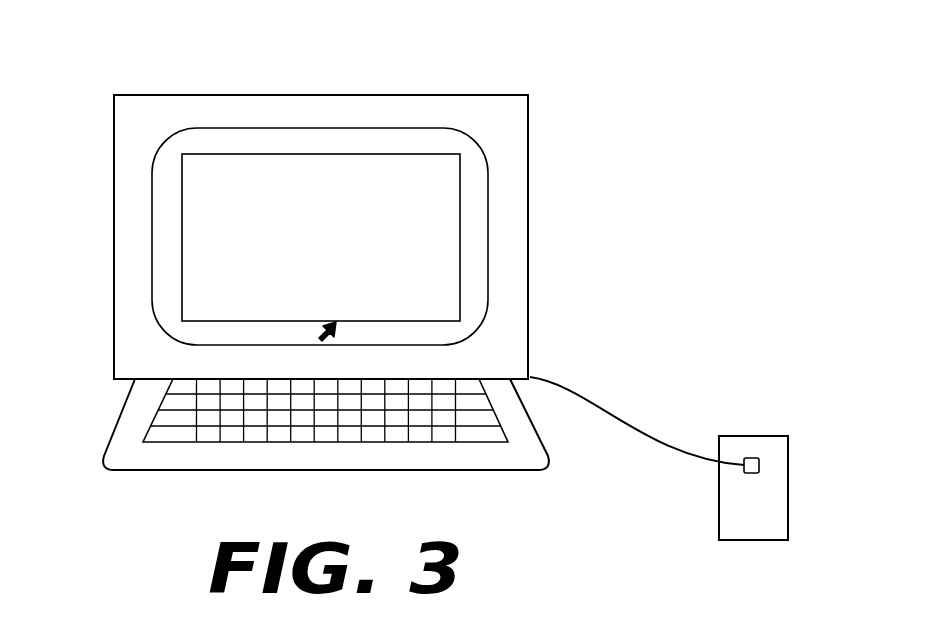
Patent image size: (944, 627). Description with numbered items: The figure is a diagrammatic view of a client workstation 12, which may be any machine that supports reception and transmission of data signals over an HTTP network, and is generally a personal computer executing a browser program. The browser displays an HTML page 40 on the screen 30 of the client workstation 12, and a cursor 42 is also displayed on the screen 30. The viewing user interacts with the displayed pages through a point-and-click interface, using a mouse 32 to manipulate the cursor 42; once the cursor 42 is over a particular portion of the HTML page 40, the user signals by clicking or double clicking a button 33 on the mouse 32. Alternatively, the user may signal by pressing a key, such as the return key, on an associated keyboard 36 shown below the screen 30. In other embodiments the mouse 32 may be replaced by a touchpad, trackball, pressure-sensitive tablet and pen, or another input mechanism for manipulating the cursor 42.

The client workstation 12 is at (115, 257).
The screen 30 is at (388, 128).
The HTML page 40 is at (460, 198).
The cursor 42 is at (342, 333).
The keyboard 36 is at (123, 410).
The mouse 32 is at (788, 508).
The button 33 is at (756, 460).